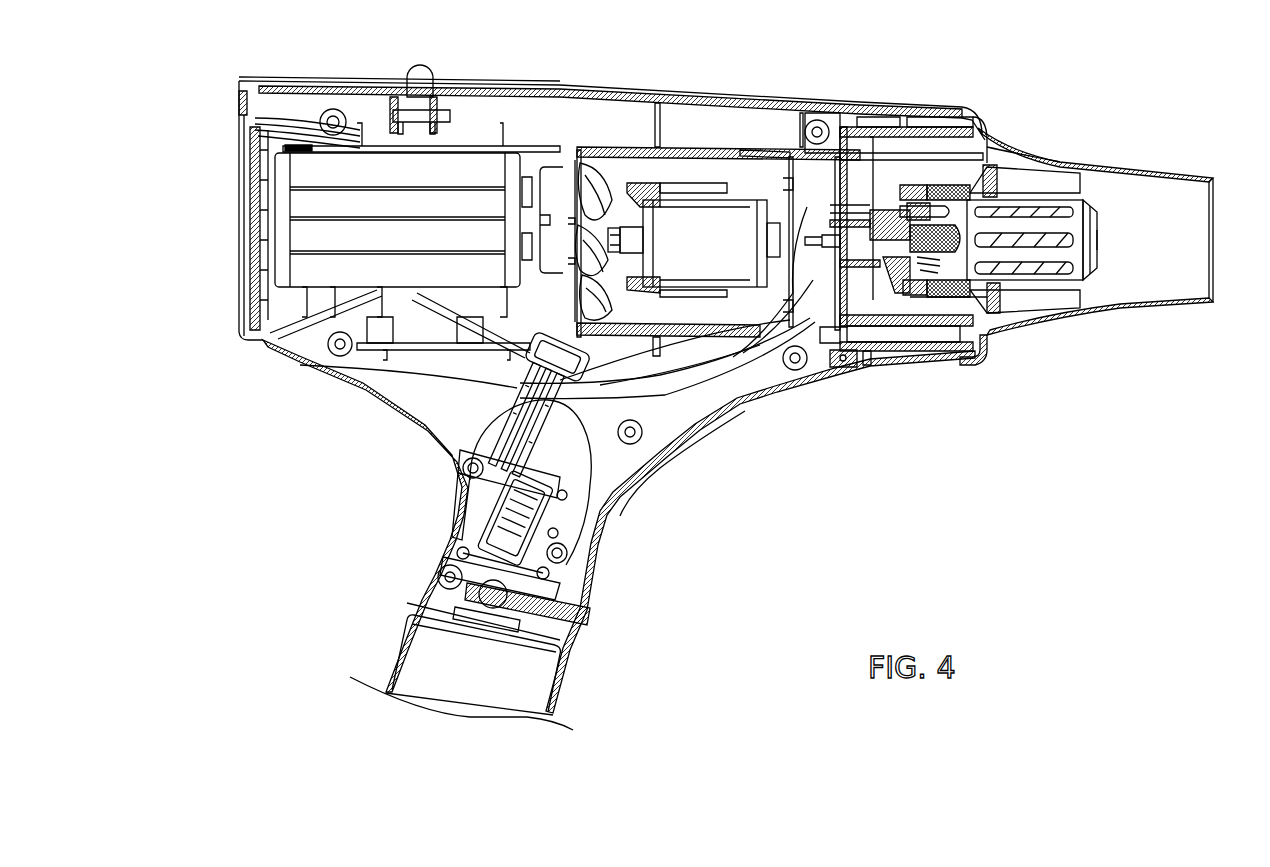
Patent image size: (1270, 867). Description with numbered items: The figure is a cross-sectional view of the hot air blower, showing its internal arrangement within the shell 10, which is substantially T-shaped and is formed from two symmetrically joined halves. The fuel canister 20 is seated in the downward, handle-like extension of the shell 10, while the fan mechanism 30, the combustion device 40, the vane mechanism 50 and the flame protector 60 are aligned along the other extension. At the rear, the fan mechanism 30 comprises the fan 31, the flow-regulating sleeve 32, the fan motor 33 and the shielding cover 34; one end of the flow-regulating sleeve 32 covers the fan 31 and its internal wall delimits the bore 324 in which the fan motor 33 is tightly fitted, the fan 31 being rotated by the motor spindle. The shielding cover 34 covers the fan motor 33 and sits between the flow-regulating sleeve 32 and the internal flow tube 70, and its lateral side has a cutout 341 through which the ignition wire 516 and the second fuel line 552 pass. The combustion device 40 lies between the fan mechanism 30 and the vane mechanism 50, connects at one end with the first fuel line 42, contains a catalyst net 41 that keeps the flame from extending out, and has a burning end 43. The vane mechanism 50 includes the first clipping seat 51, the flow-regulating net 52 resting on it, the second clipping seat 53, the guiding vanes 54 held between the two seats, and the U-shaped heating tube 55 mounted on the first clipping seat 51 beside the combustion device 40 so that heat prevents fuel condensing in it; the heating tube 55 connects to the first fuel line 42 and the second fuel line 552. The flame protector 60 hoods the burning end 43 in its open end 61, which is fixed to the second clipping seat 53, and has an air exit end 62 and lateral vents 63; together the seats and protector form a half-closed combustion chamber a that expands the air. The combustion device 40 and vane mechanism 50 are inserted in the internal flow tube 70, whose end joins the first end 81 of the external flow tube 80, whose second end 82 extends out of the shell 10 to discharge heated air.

The shell 10 is at (612, 397).
The fuel canister 20 is at (540, 683).
The fan mechanism 30 is at (700, 58).
The fan 31 is at (593, 170).
The flow-regulating sleeve 32 is at (633, 142).
The bore 324 is at (657, 203).
The fan motor 33 is at (737, 210).
The shielding cover 34 is at (760, 150).
The first fuel line 42 is at (793, 203).
The second fuel line 552 is at (837, 203).
The combustion device 40 is at (853, 213).
The first clipping seat 51 is at (913, 170).
The heating tube 55 is at (947, 174).
The catalyst net 41 is at (933, 225).
The second clipping seat 53 is at (950, 172).
The vane mechanism 50 is at (1020, 158).
The burning end 43 is at (992, 193).
The guiding vanes 54 is at (1033, 183).
The half-closed combustion chamber a is at (1060, 210).
The vents 63 is at (1037, 280).
The flame protector 60 is at (1087, 280).
The air exit end 62 is at (1105, 246).
The external flow tube 80 is at (1167, 310).
The second end 82 is at (1207, 320).
The first end 81 is at (967, 360).
The open end 61 is at (927, 340).
The flow-regulating net 52 is at (897, 340).
The internal flow tube 70 is at (860, 340).
The cutout 341 is at (820, 322).
The ignition wire 516 is at (760, 367).